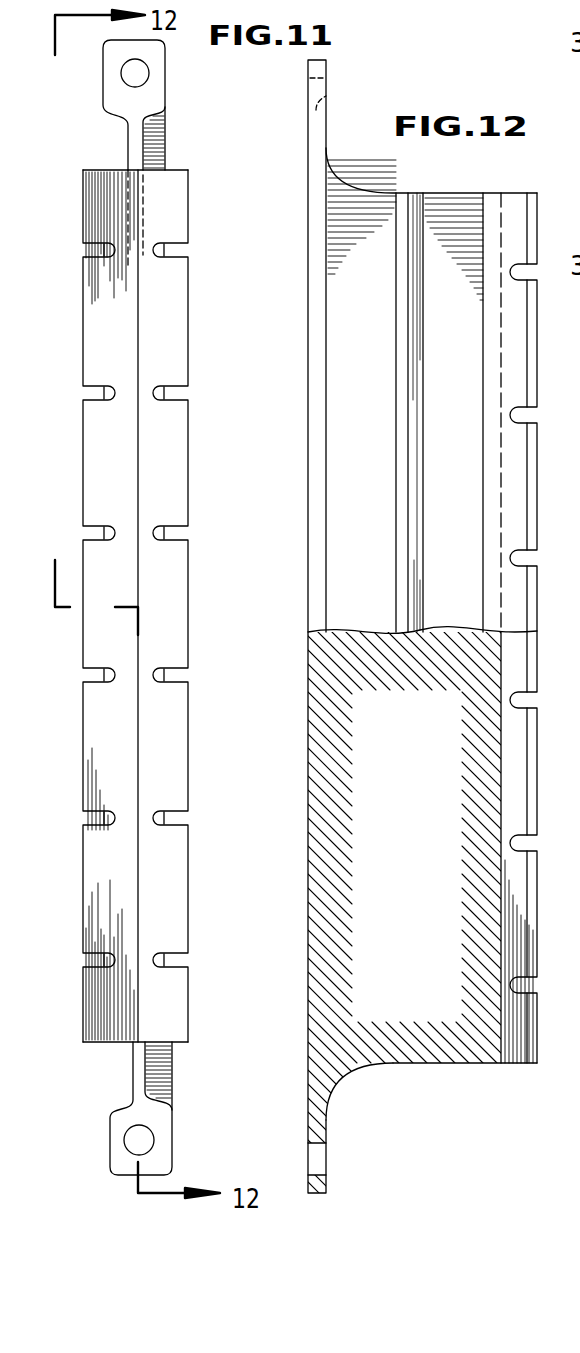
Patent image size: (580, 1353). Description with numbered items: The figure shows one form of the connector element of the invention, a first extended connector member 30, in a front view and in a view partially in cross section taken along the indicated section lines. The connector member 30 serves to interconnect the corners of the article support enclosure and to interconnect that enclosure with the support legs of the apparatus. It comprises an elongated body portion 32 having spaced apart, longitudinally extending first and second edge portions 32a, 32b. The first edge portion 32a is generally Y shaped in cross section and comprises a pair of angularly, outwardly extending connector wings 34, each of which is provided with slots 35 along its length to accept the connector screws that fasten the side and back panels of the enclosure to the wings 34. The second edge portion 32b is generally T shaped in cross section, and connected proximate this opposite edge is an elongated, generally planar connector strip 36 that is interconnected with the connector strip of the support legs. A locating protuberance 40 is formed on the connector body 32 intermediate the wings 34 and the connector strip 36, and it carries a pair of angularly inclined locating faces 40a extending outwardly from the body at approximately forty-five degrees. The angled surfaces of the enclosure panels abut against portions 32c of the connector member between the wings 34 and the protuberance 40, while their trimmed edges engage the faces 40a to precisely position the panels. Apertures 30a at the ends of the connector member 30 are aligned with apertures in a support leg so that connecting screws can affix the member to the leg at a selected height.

In FIG. 11, the first extended connector member 30 is at (75, 175).
In FIG. 12, the first extended connector member 30 is at (298, 306).
In FIG. 11, the aperture 30a is at (137, 86).
In FIG. 12, the aperture 30a is at (328, 96).
In FIG. 12, the elongated body portion 32 is at (450, 190).
In FIG. 12, the first edge portion 32a is at (483, 330).
In FIG. 12, the second edge portion 32b is at (347, 445).
In FIG. 12, the portion of the connector member 32c is at (442, 280).
In FIG. 11, the connector wing 34 is at (168, 297).
In FIG. 12, the connector wing 34 is at (512, 482).
In FIG. 11, the slot 35 is at (88, 250).
In FIG. 12, the slot 35 is at (516, 558).
In FIG. 11, the connector strip 36 is at (150, 143).
In FIG. 12, the connector strip 36 is at (312, 518).
In FIG. 12, the locating protuberance 40 is at (410, 376).
In FIG. 12, the locating face 40a is at (417, 533).